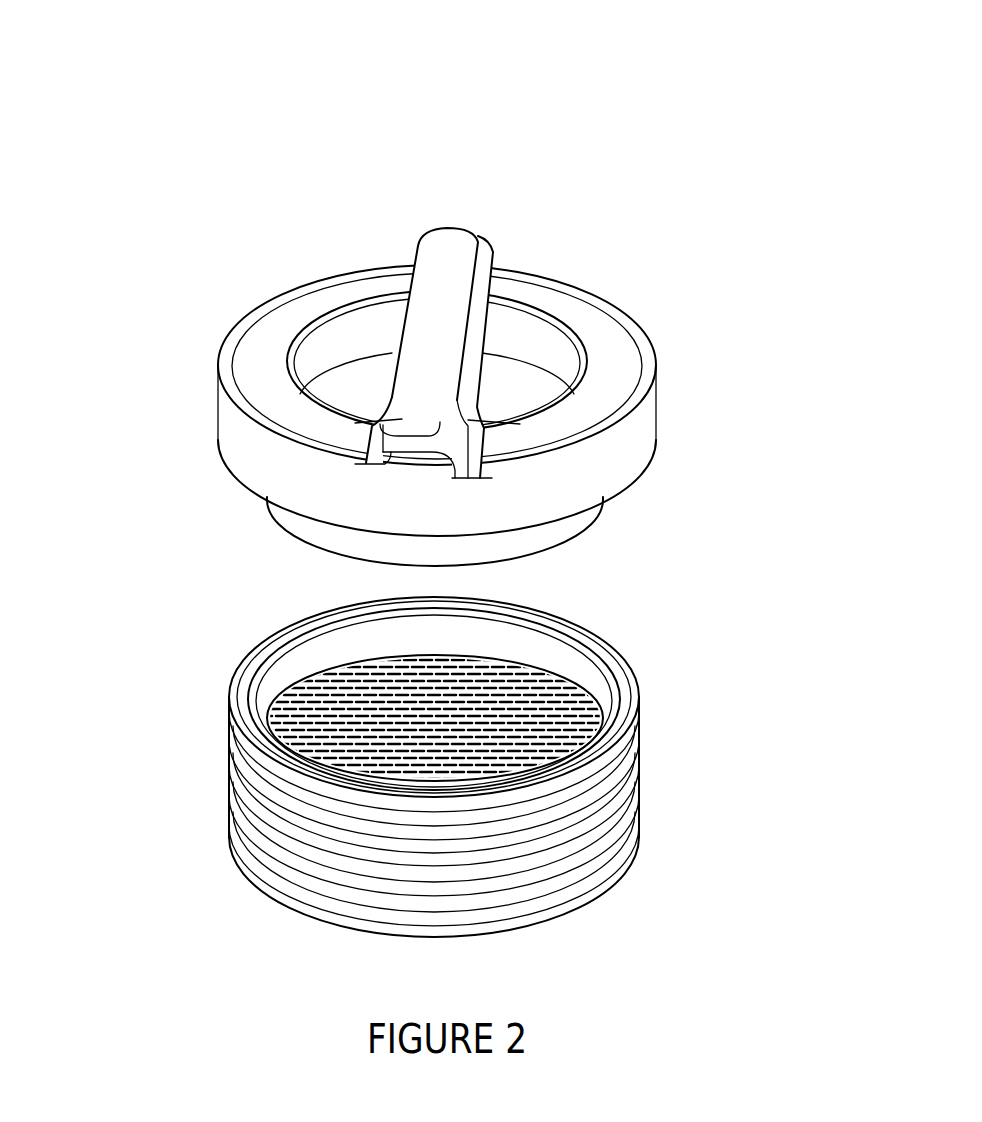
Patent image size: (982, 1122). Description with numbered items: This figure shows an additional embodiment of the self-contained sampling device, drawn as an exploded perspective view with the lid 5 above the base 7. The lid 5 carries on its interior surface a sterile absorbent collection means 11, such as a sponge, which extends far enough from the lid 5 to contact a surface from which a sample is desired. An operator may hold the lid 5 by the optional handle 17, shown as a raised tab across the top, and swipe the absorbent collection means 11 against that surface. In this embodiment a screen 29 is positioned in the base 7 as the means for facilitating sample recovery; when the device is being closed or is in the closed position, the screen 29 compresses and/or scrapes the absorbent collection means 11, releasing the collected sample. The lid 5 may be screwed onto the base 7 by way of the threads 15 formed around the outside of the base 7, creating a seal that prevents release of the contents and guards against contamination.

The lid 5 is at (272, 311).
The handle 17 is at (448, 286).
The absorbent collection means 11 is at (512, 548).
The screen 29 is at (350, 703).
The threads 15 is at (252, 772).
The base 7 is at (580, 880).